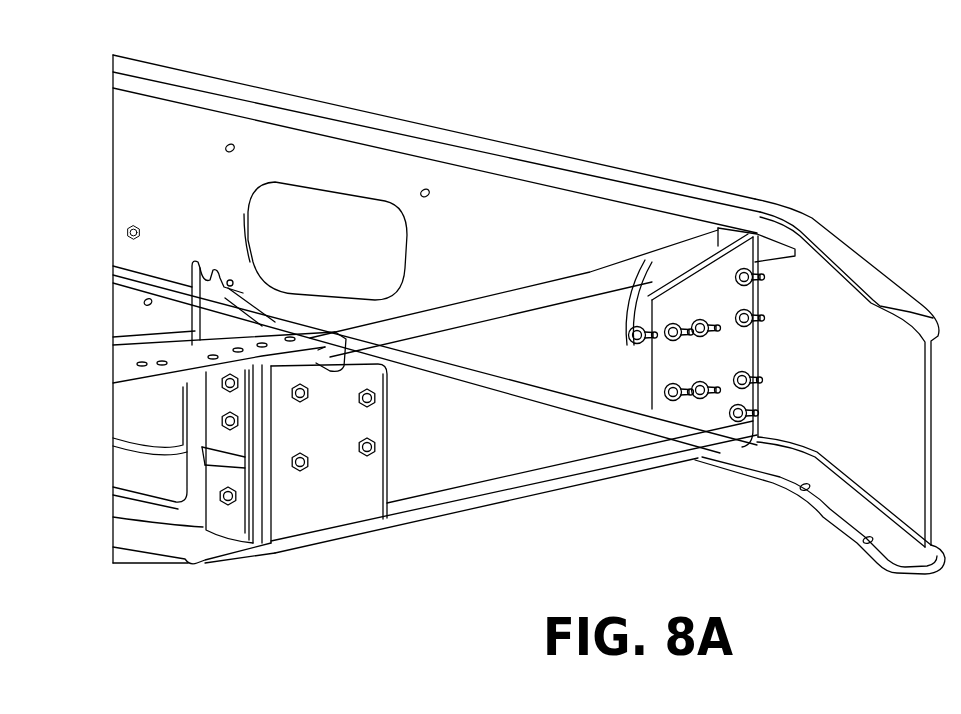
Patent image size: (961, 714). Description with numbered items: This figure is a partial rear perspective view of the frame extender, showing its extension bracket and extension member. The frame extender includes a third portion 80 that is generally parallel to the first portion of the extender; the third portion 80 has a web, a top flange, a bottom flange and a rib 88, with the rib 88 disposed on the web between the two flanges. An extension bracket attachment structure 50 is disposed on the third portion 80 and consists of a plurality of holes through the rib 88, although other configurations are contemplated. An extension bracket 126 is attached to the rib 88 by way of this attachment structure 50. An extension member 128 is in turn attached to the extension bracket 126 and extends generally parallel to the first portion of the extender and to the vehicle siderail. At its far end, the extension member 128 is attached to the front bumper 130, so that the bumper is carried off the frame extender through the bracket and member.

The extension bracket attachment structure 50 is at (183, 510).
The third portion 80 is at (245, 335).
The rib 88 is at (237, 520).
The extension bracket 126 is at (360, 490).
The extension member 128 is at (547, 460).
The front bumper 130 is at (582, 187).